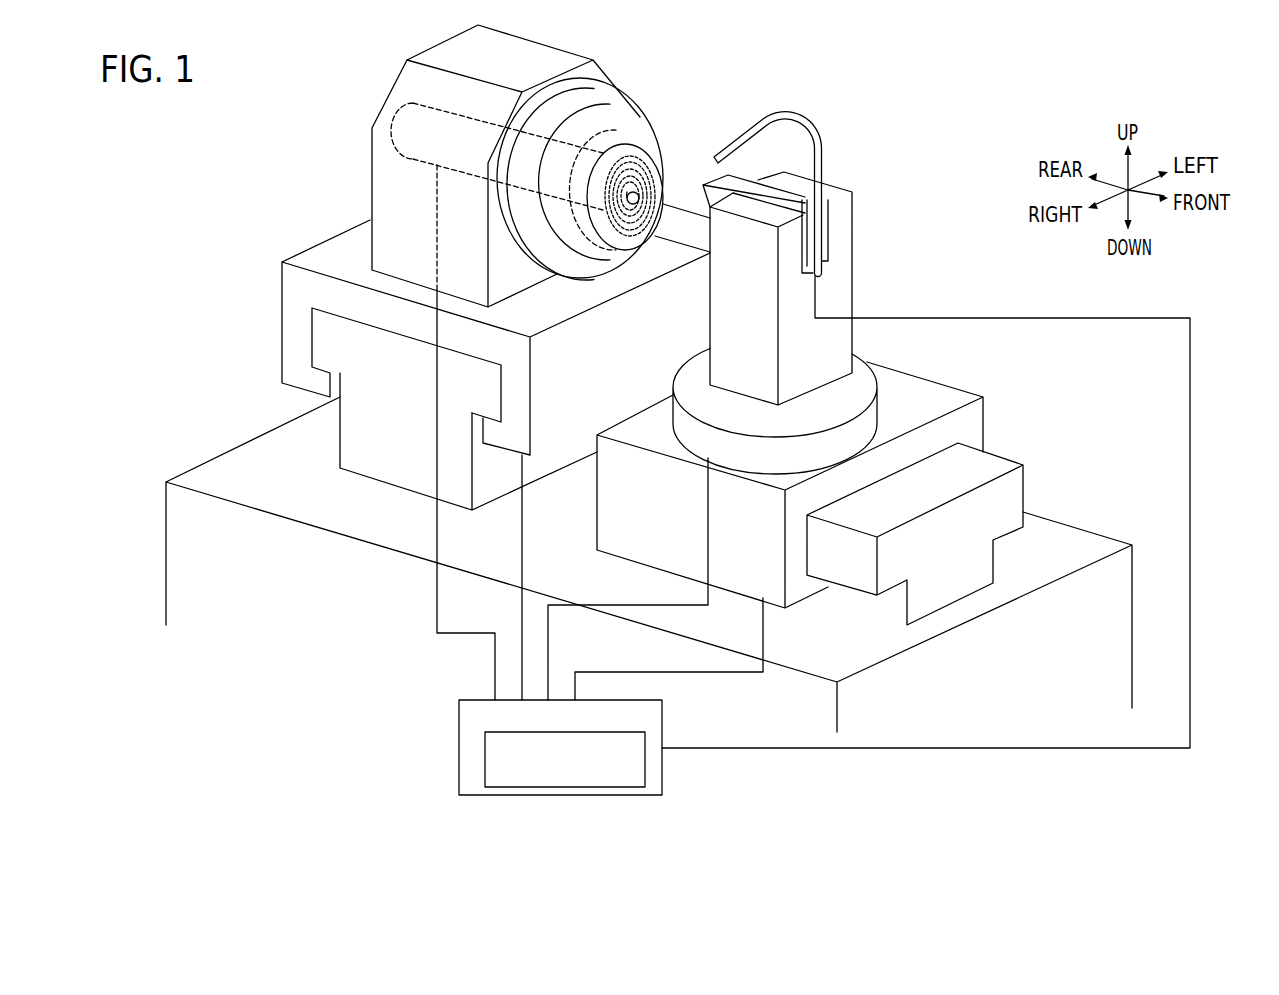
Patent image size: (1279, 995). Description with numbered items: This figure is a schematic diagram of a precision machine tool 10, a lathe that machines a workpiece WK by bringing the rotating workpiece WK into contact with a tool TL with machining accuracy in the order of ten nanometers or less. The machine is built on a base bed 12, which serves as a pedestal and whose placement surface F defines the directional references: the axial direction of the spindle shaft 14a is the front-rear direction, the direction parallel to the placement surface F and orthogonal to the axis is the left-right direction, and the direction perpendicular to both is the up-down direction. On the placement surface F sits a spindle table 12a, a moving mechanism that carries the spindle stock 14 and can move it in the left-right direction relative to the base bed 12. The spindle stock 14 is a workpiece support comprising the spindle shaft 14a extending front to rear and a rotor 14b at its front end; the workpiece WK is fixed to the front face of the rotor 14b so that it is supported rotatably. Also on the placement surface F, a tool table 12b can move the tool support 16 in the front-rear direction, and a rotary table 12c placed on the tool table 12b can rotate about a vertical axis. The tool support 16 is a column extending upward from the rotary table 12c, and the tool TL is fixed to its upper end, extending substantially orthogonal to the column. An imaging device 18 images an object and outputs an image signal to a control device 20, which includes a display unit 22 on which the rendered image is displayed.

The precision machine tool 10 is at (160, 139).
The base bed 12 is at (193, 562).
The spindle table 12a is at (282, 323).
The tool table 12b is at (985, 420).
The rotary table 12c is at (858, 360).
The spindle stock 14 is at (390, 183).
The spindle shaft 14a is at (390, 107).
The rotor 14b is at (608, 117).
The tool support 16 is at (840, 222).
The imaging device 18 is at (808, 123).
The control device 20 is at (459, 727).
The display unit 22 is at (485, 760).
The workpiece WK is at (640, 200).
The tool TL is at (733, 185).
The placement surface F is at (260, 463).